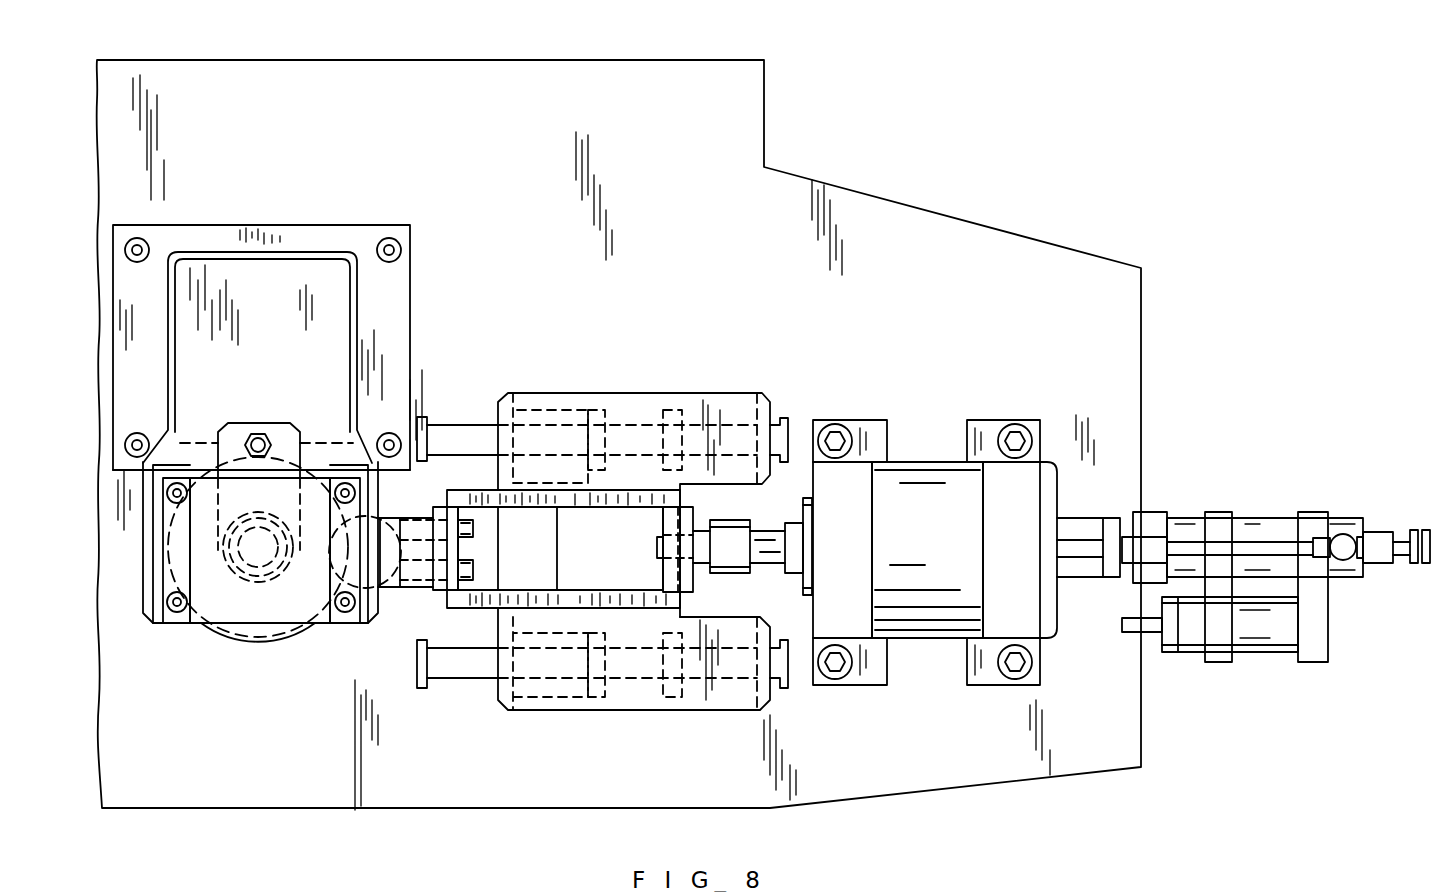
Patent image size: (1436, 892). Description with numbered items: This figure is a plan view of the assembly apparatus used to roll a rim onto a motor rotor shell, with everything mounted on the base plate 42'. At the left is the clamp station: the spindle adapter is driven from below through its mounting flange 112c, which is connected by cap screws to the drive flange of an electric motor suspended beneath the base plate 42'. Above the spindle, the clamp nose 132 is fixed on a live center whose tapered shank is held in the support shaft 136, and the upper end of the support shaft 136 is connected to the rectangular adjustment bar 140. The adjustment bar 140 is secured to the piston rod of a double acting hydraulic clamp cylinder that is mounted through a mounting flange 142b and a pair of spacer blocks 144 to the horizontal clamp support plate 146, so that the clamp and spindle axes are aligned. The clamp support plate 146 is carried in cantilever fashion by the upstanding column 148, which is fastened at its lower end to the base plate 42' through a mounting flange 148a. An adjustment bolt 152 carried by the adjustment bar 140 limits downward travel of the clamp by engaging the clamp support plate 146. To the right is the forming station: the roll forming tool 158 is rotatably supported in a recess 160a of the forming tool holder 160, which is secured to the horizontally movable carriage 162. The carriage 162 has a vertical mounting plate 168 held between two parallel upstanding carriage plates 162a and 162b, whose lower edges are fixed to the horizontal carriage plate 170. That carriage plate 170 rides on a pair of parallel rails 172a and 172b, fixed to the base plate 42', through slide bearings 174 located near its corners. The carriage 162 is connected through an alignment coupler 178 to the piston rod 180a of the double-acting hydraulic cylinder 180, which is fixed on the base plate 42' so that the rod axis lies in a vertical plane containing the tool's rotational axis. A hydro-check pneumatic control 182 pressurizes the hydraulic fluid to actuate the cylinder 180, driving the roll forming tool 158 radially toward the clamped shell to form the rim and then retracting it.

The base plate 42' is at (619, 440).
The mounting flange 112c is at (253, 643).
The clamp nose 132 is at (260, 570).
The support shaft 136 is at (278, 577).
The adjustment bar 140 is at (230, 435).
The mounting flange 142b is at (184, 625).
The spacer blocks 144 is at (158, 628).
The clamp support plate 146 is at (140, 540).
The support column 148 is at (290, 253).
The mounting flange 148a is at (377, 236).
The adjustment bolt 152 is at (258, 438).
The roll forming tool 158 is at (372, 573).
The forming tool holder 160 is at (408, 524).
The recess 160a is at (438, 507).
The carriage 162 is at (569, 385).
The carriage plate 162a is at (572, 594).
The carriage plate 162b is at (570, 503).
The mounting plate 168 is at (460, 545).
The carriage plate 170 is at (650, 405).
The rail 172a is at (463, 667).
The rail 172b is at (487, 427).
The slide bearings 174 is at (603, 395).
The alignment coupler 178 is at (730, 530).
The double-acting hydraulic cylinder 180 is at (923, 476).
The piston rod 180a is at (780, 563).
The hydro-check pneumatic control 182 is at (1237, 490).